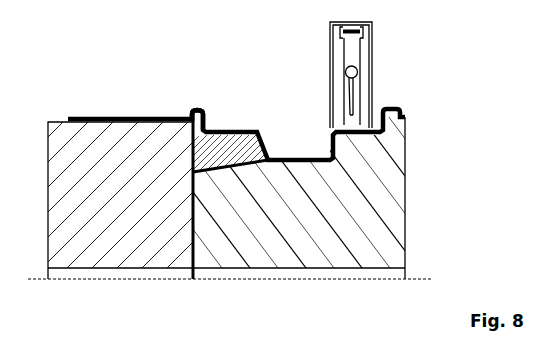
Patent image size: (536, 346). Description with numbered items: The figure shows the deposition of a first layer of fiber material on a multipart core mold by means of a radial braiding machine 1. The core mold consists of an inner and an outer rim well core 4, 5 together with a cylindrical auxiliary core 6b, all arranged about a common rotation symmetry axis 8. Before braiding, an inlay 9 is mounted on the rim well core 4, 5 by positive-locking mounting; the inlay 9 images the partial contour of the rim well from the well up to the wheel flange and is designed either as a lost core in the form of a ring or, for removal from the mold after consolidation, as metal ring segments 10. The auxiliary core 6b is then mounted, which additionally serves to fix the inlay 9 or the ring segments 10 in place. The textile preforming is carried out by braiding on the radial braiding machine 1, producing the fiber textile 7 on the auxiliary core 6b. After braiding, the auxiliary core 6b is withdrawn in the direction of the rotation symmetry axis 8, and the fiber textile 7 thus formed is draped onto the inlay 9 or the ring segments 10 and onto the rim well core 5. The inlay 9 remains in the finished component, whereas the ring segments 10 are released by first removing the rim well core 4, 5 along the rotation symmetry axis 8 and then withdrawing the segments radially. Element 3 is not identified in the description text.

The radial braiding machine 1 is at (372, 46).
The rod with ball 3 is at (344, 53).
The rim well core 4 is at (396, 204).
The rim well core 5 is at (301, 166).
The auxiliary core 6b is at (55, 146).
The fiber textile 7 is at (236, 128).
The rotation symmetry axis 8 is at (421, 277).
The inlay 9 is at (207, 111).
The ring segments 10 is at (212, 107).